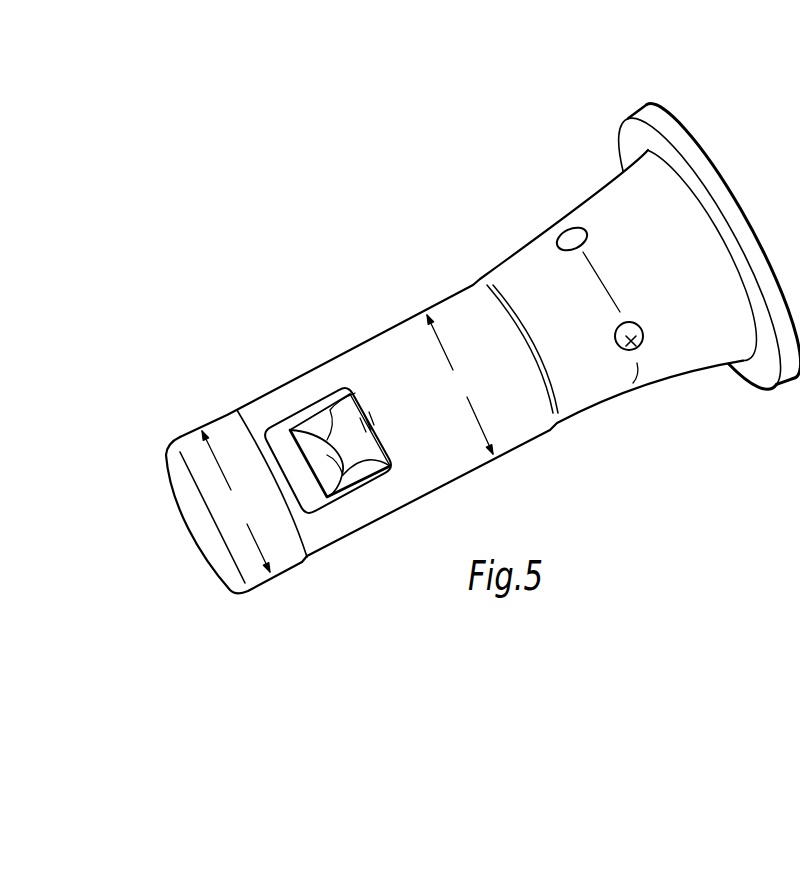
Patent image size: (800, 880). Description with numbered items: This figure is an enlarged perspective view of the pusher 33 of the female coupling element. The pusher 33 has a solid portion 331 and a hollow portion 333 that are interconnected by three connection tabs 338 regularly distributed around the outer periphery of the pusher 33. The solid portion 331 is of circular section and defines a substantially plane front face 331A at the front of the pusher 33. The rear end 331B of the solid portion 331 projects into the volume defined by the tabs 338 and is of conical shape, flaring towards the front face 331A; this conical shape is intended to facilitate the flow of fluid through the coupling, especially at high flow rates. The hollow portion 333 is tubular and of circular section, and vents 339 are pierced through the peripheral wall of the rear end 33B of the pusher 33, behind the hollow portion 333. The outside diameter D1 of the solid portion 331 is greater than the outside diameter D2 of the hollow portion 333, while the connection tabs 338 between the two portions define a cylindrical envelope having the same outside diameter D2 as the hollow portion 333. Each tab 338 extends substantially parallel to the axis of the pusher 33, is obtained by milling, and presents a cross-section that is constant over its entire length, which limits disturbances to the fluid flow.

The pusher 33 is at (357, 244).
The solid portion 331 is at (217, 427).
The front face 331A is at (215, 540).
The rear end of the solid portion 331B is at (344, 392).
The hollow portion 333 is at (517, 427).
The connection tabs 338 is at (343, 392).
The vents 339 is at (571, 240).
The rear end of the pusher 33B is at (690, 320).
The outside diameter of the solid portion D1 is at (236, 501).
The outside diameter of the hollow portion D2 is at (460, 384).